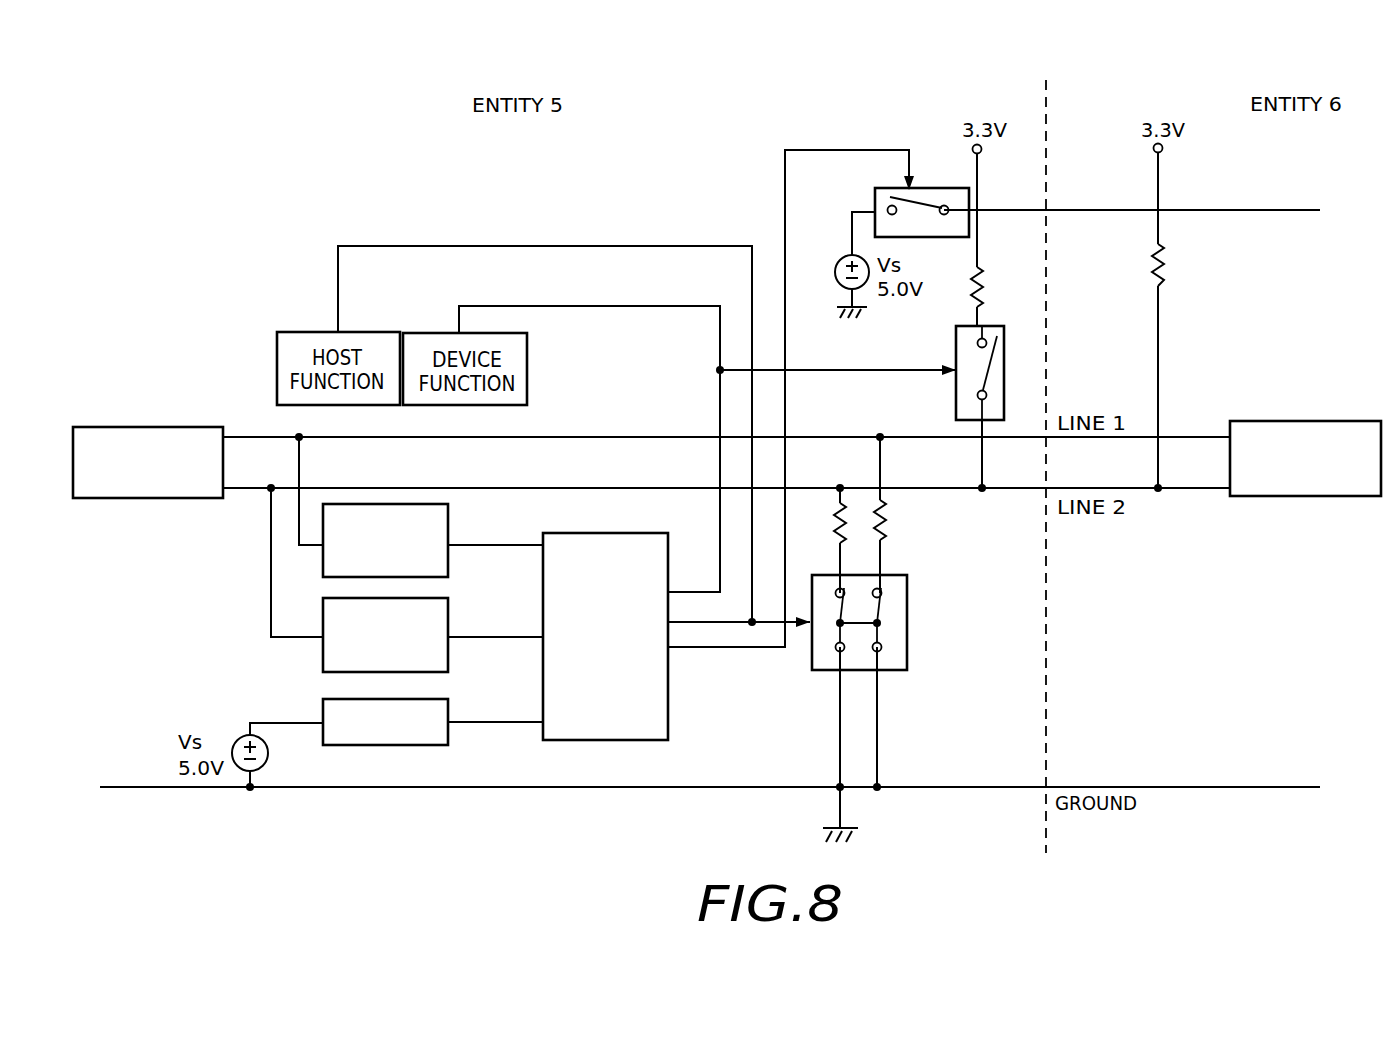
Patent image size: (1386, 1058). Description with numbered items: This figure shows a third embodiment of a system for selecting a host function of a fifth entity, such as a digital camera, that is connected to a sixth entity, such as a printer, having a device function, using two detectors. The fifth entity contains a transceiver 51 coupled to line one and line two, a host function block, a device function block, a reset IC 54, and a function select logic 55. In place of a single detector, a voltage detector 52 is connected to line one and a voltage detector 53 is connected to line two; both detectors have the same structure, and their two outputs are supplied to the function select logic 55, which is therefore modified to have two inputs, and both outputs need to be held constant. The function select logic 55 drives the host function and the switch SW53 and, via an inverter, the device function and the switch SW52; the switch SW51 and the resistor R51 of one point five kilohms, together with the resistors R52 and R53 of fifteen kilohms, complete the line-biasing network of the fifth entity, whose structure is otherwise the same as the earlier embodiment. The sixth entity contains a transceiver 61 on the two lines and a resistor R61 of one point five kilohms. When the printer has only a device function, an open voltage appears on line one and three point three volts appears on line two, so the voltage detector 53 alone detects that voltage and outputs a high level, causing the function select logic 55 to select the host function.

The transceiver 51 is at (139, 427).
The voltage detector 52 is at (450, 533).
The voltage detector 53 is at (450, 618).
The reset IC 54 is at (450, 703).
The function select logic 55 is at (593, 532).
The transceiver 61 is at (1295, 421).
The switch SW51 is at (881, 212).
The switch SW52 is at (1010, 373).
The switch SW53 is at (891, 622).
The resistor R51 is at (1004, 266).
The resistor R52 is at (810, 526).
The resistor R53 is at (909, 525).
The resistor R61 is at (1191, 268).